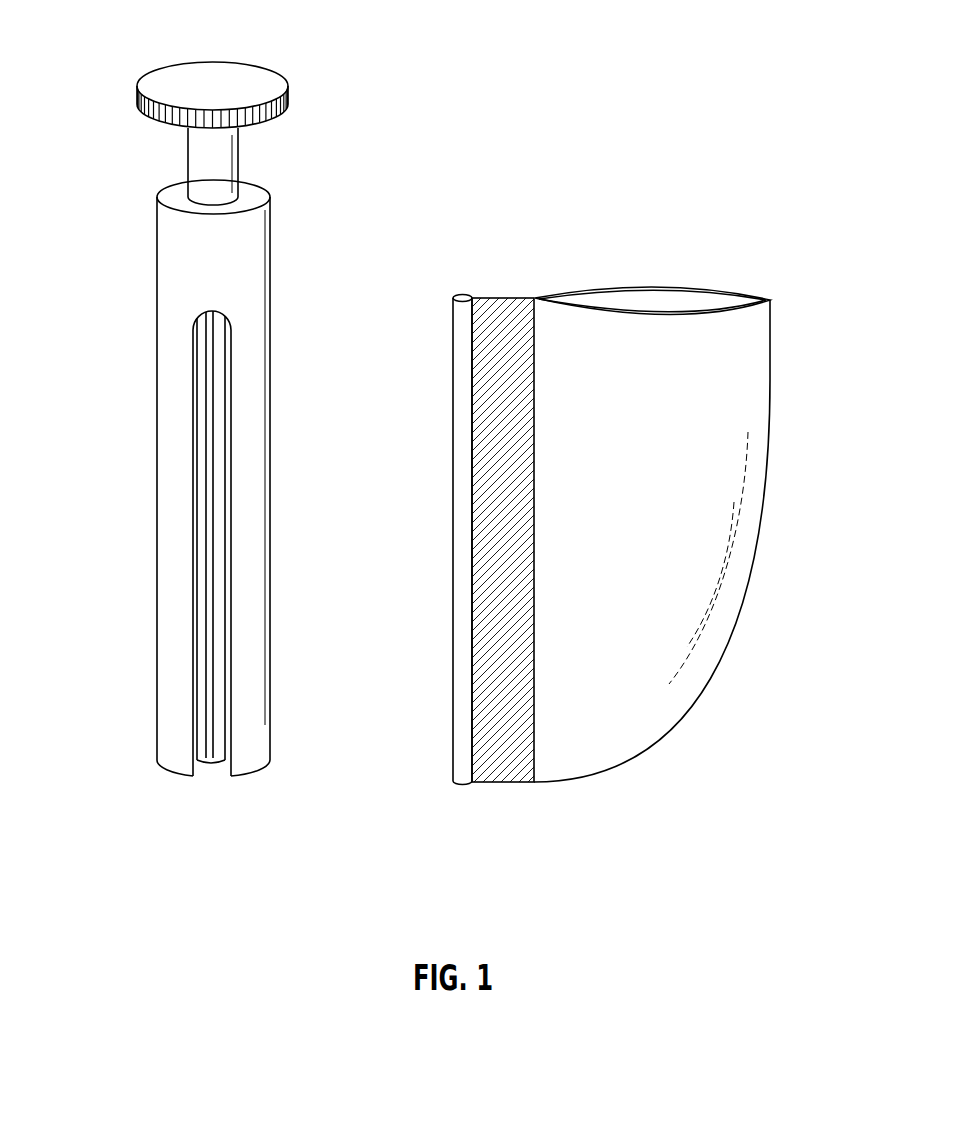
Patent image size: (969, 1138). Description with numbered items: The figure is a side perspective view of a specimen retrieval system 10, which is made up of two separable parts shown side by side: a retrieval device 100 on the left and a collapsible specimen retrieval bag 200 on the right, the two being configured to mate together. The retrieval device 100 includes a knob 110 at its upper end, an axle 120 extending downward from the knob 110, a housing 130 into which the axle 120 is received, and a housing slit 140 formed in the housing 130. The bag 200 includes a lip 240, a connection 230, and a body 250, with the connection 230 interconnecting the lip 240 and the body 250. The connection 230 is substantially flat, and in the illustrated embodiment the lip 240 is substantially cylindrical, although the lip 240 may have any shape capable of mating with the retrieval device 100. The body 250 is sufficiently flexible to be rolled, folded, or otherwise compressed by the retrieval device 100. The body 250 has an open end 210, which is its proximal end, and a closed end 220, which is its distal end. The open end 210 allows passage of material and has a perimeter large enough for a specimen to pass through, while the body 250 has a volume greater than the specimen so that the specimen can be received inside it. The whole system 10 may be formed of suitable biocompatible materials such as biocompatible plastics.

The specimen retrieval system 10 is at (622, 60).
The retrieval device 100 is at (145, 38).
The knob 110 is at (268, 83).
The axle 120 is at (238, 164).
The housing 130 is at (255, 320).
The housing slit 140 is at (208, 583).
The collapsible specimen retrieval bag 200 is at (739, 245).
The open end 210 is at (770, 308).
The closed end 220 is at (548, 782).
The connection 230 is at (503, 762).
The lip 240 is at (467, 548).
The body 250 is at (738, 572).